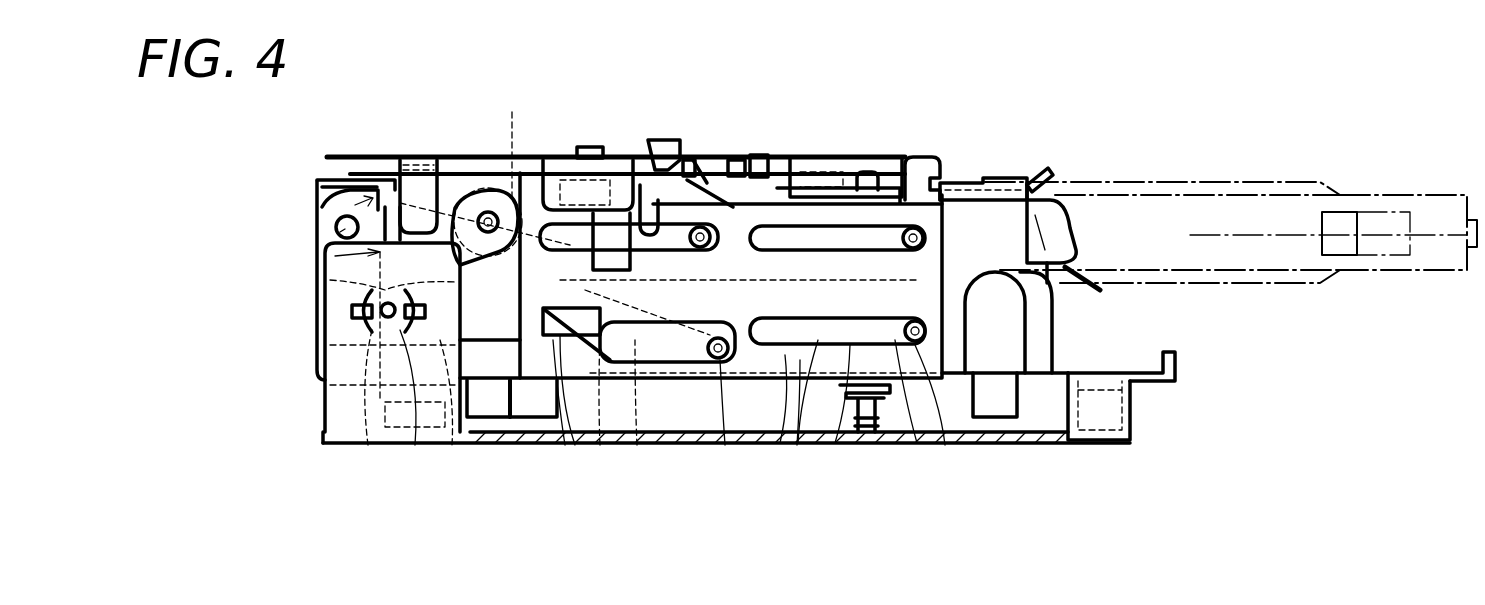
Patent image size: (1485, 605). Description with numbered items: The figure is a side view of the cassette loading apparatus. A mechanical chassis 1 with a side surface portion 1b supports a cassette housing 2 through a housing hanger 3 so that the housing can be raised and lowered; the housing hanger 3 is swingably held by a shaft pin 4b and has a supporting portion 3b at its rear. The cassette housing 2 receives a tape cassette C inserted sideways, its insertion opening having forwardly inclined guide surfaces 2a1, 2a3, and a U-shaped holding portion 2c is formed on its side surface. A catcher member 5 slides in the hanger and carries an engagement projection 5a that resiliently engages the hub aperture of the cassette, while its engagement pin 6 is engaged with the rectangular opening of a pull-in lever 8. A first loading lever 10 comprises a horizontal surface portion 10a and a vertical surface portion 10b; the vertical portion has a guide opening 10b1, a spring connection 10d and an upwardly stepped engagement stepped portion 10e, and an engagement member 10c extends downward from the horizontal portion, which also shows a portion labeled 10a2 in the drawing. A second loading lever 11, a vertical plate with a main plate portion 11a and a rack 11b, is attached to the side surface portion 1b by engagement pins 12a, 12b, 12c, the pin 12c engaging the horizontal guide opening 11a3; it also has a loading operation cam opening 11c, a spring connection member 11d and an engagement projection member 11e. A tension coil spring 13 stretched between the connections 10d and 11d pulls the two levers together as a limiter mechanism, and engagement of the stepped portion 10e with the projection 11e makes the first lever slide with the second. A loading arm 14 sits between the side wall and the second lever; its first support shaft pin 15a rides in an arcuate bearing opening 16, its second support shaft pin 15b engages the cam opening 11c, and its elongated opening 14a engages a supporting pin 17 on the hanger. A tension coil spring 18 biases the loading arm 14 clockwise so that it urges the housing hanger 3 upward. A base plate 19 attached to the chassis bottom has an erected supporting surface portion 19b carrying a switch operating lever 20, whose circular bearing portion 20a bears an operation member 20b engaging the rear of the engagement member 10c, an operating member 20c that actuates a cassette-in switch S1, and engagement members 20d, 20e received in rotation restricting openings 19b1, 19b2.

The mechanical chassis 1 is at (1177, 362).
The side surface portion 1b is at (1065, 290).
The cassette housing 2 is at (963, 182).
The guide surface 2a1 is at (1045, 170).
The guide surface 2a3 is at (1105, 293).
The holding portion 2c is at (1052, 222).
The housing hanger 3 is at (318, 178).
The supporting portion 3b is at (372, 165).
The shaft pin 4b is at (336, 230).
The catcher member 5 is at (775, 150).
The engagement projection 5a is at (797, 152).
The engagement pin 6 is at (655, 140).
The pull-in lever 8 is at (690, 160).
The first loading lever 10 is at (835, 443).
The horizontal surface portion 10a is at (460, 160).
The bracket portion of rail 10a2 is at (668, 157).
The vertical surface portion 10b is at (917, 443).
The guide opening 10b1 is at (705, 150).
The engagement member 10c is at (420, 187).
The spring connection 10d is at (925, 157).
The engagement stepped portion 10e is at (860, 182).
The second loading lever 11 is at (947, 308).
The main plate portion 11a is at (780, 443).
The horizontal guide opening 11a3 is at (798, 443).
The rack 11b is at (797, 445).
The loading operation cam opening 11c is at (575, 445).
The spring connection member 11d is at (757, 148).
The engagement projection member 11e is at (833, 197).
The engagement pin 12a is at (927, 232).
The engagement pin 12b is at (700, 262).
The engagement pin 12c is at (945, 445).
The tension coil spring 13 is at (812, 150).
The loading arm 14 is at (565, 445).
The elongated opening 14a is at (485, 165).
The first support shaft pin 15a is at (637, 445).
The second support shaft pin 15b is at (725, 445).
The bearing opening 16 is at (600, 445).
The supporting pin 17 is at (485, 160).
The tension coil spring 18 is at (555, 152).
The base plate 19 is at (993, 445).
The supporting surface portion 19b is at (370, 300).
The rotation restricting opening 19b1 is at (415, 445).
The rotation restricting opening 19b2 is at (362, 340).
The switch operating lever 20 is at (323, 260).
The circular bearing portion 20a is at (330, 282).
The operation member 20b is at (318, 208).
The operating member 20c is at (368, 445).
The engagement member 20d is at (433, 310).
The engagement member 20e is at (355, 328).
The tape cassette C is at (1218, 182).
The cassette-in switch S1 is at (452, 445).